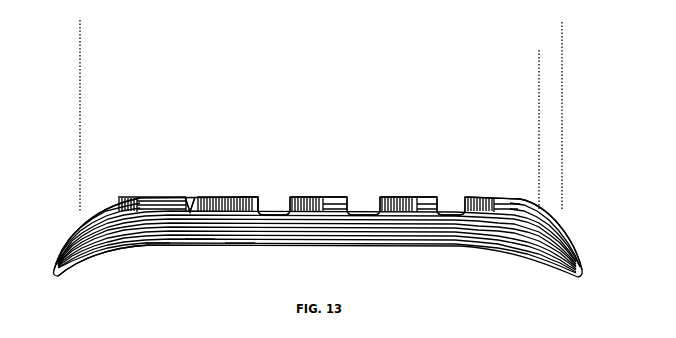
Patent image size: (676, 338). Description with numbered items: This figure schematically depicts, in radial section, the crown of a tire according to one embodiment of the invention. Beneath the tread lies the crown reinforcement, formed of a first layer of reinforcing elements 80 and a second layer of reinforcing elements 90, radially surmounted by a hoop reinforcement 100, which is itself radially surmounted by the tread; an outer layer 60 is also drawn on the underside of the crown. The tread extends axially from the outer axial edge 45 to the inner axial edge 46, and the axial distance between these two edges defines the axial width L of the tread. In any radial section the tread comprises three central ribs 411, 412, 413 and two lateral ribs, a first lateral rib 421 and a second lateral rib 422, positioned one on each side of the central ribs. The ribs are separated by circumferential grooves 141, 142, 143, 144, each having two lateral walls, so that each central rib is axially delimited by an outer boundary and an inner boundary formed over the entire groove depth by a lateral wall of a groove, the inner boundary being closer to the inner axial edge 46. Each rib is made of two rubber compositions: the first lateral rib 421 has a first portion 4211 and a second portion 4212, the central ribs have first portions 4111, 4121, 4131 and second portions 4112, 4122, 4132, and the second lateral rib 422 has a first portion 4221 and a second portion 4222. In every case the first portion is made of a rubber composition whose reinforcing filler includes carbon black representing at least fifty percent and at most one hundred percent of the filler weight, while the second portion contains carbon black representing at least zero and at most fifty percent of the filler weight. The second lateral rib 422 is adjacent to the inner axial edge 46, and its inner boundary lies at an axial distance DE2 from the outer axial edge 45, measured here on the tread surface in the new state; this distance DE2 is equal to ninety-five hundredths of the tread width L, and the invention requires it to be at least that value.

The outer axial edge 45 is at (77, 214).
The inner axial edge 46 is at (563, 208).
The outer layer 60 is at (96, 252).
The first layer of reinforcing elements 80 is at (158, 244).
The second layer of reinforcing elements 90 is at (200, 246).
The hoop reinforcement 100 is at (240, 247).
The circumferential groove 141 is at (188, 190).
The circumferential groove 142 is at (276, 206).
The circumferential groove 143 is at (365, 207).
The circumferential groove 144 is at (452, 207).
The central rib 411 is at (232, 177).
The central rib 412 is at (321, 170).
The central rib 413 is at (410, 170).
The first lateral rib 421 is at (141, 180).
The second lateral rib 422 is at (497, 173).
The first portion 4111 is at (215, 194).
The second portion 4112 is at (250, 194).
The first portion 4121 is at (308, 194).
The second portion 4122 is at (348, 194).
The first portion 4131 is at (396, 194).
The second portion 4132 is at (432, 194).
The first portion 4211 is at (105, 205).
The second portion 4212 is at (154, 197).
The first portion 4221 is at (472, 194).
The second portion 4222 is at (527, 199).
The axial width of the tread L is at (554, 37).
The axial distance DE2 is at (88, 71).